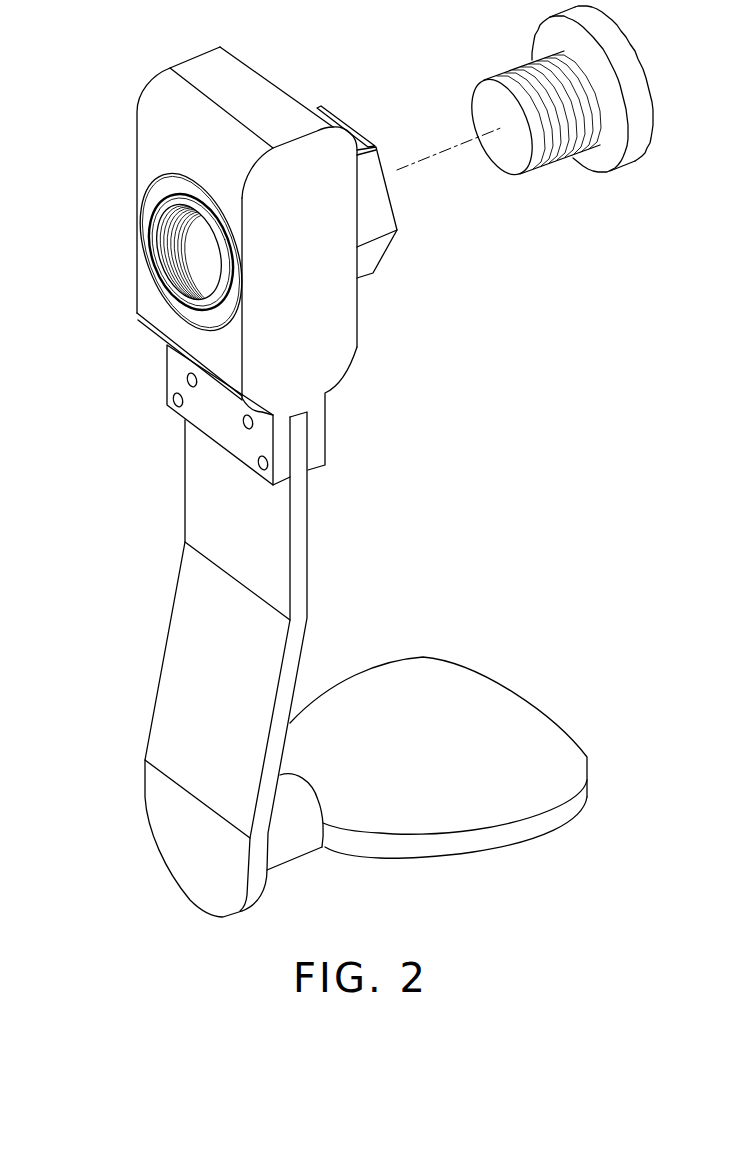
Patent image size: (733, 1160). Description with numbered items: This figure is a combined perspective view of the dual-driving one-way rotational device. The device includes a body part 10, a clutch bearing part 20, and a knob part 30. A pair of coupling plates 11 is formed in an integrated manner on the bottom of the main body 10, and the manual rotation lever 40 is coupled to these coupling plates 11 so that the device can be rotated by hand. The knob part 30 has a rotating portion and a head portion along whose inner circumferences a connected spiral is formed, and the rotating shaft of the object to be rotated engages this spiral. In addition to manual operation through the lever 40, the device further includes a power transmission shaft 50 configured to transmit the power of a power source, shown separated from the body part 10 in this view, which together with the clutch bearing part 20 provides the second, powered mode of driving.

The body part 10 is at (330, 325).
The coupling plates 11 is at (318, 437).
The clutch bearing part 20 is at (160, 189).
The knob part 30 is at (377, 218).
The manual rotation lever 40 is at (182, 685).
The power transmission shaft 50 is at (603, 155).